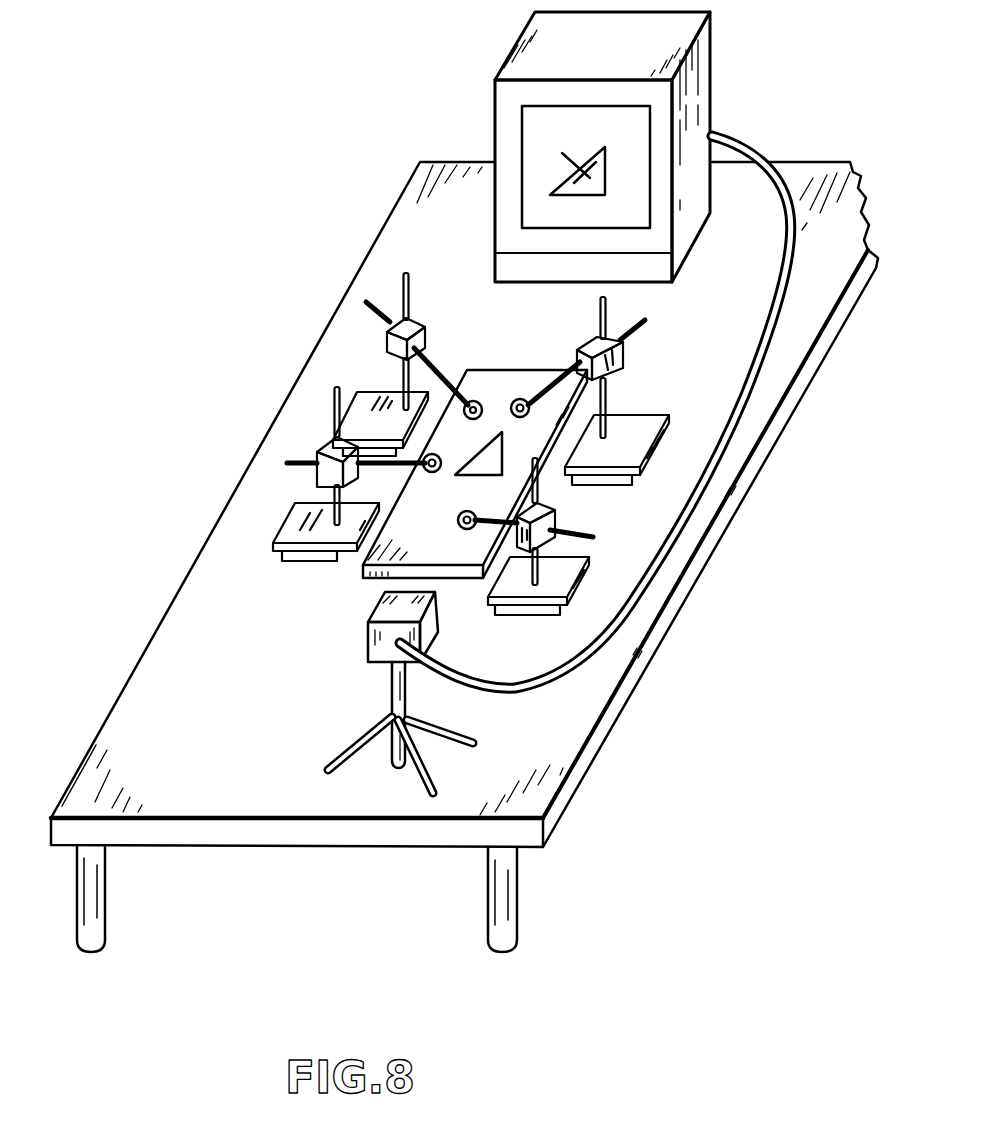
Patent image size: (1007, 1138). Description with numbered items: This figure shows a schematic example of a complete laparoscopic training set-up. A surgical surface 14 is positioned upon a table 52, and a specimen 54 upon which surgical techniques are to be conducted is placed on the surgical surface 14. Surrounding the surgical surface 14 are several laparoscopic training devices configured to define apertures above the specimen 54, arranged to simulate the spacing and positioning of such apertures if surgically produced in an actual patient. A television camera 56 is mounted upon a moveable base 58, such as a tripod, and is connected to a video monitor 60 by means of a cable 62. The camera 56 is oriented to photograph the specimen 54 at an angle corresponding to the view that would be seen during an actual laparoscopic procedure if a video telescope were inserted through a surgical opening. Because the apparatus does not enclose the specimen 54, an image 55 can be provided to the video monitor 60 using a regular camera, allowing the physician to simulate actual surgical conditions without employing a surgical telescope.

The surgical surface 14 is at (358, 580).
The table 52 is at (235, 798).
The specimen 54 is at (490, 453).
The image 55 is at (571, 155).
The television camera 56 is at (380, 656).
The moveable base 58 is at (407, 690).
The video monitor 60 is at (698, 50).
The cable 62 is at (743, 143).